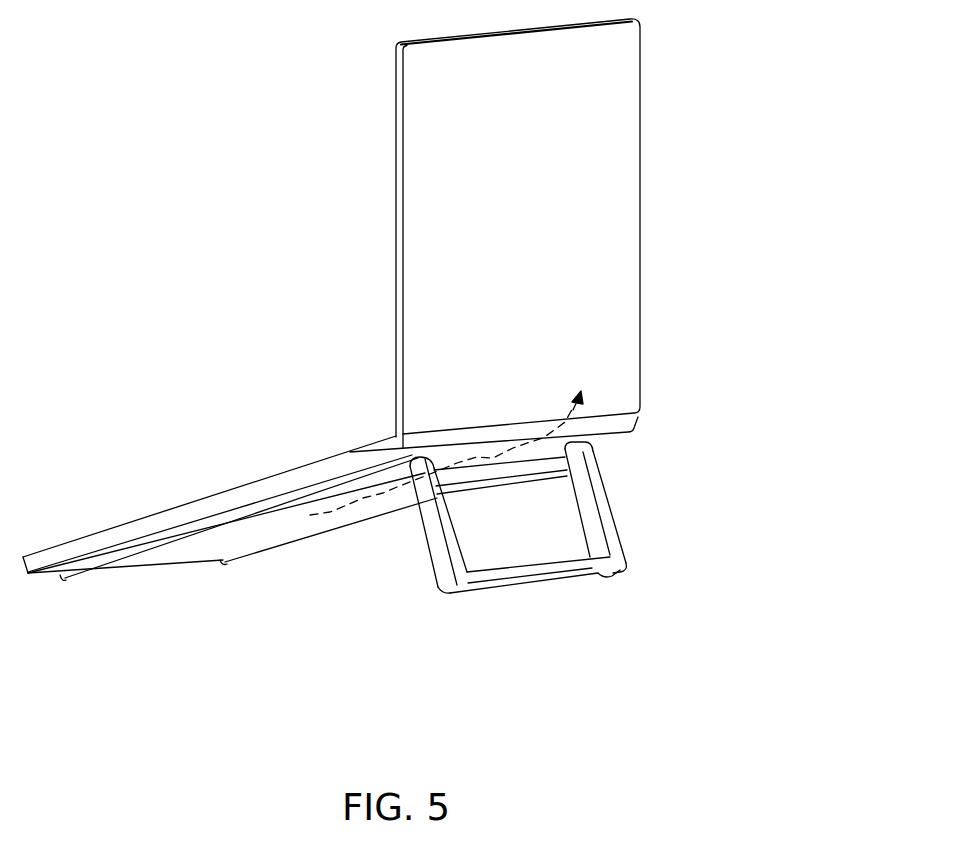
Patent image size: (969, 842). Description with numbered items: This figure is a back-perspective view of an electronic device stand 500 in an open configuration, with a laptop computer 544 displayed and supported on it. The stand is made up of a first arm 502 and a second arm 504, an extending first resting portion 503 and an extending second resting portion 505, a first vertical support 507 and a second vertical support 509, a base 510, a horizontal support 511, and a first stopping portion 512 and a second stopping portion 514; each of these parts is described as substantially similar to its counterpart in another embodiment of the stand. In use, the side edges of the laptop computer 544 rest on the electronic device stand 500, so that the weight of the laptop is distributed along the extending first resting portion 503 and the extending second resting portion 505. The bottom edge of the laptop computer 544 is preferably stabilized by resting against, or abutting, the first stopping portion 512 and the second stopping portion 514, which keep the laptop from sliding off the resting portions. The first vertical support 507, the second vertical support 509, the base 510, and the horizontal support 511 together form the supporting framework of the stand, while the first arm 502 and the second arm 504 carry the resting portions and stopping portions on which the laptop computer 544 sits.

The electronic device stand 500 is at (664, 487).
The laptop computer 544 is at (628, 110).
The extending first resting portion 503 is at (230, 566).
The extending second resting portion 505 is at (99, 568).
The second arm 504 is at (151, 560).
The second stopping portion 514 is at (62, 580).
The first stopping portion 512 is at (224, 566).
The first arm 502 is at (308, 542).
The first vertical support 507 is at (572, 562).
The second vertical support 509 is at (432, 532).
The horizontal support 511 is at (520, 586).
The base 510 is at (567, 587).